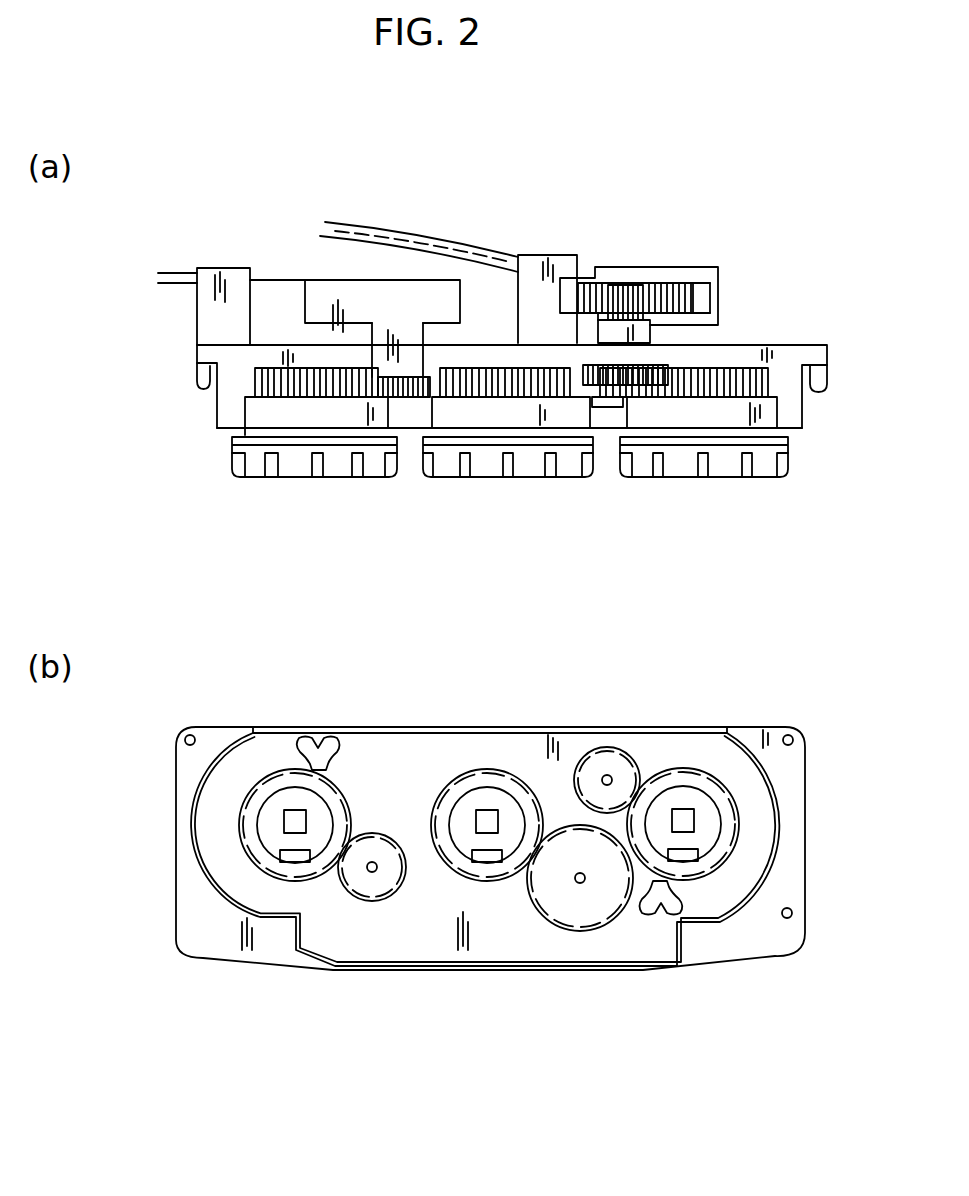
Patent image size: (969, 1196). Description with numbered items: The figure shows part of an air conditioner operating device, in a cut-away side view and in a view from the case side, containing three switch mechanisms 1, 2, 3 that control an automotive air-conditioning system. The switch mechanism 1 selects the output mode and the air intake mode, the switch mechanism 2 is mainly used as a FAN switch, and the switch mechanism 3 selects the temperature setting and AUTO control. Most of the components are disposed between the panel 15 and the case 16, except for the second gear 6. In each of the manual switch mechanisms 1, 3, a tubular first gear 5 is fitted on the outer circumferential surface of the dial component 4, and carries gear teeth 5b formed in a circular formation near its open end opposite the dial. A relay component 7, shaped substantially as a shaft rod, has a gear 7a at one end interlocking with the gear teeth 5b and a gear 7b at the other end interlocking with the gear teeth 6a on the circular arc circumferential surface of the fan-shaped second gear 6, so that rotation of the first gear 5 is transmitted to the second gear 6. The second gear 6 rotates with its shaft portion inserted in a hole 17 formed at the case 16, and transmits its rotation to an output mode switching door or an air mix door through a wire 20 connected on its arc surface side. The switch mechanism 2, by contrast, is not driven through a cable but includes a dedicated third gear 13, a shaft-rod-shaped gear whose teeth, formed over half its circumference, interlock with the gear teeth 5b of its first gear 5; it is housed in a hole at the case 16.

The switch mechanism 1 is at (309, 495).
The switch mechanism 2 is at (494, 495).
The switch mechanism 3 is at (686, 495).
The dial component 4 is at (232, 445).
The first gear 5 is at (255, 385).
The gear teeth 5b is at (257, 375).
The second gear 6 is at (715, 295).
The gear teeth 6a is at (702, 298).
The relay component 7 is at (385, 335).
The gear 7a is at (393, 400).
The gear 7b is at (618, 285).
The third gear 13 is at (572, 365).
The panel 15 is at (795, 433).
The case 16 is at (790, 343).
The hole 17 is at (320, 735).
The wire 20 is at (172, 272).